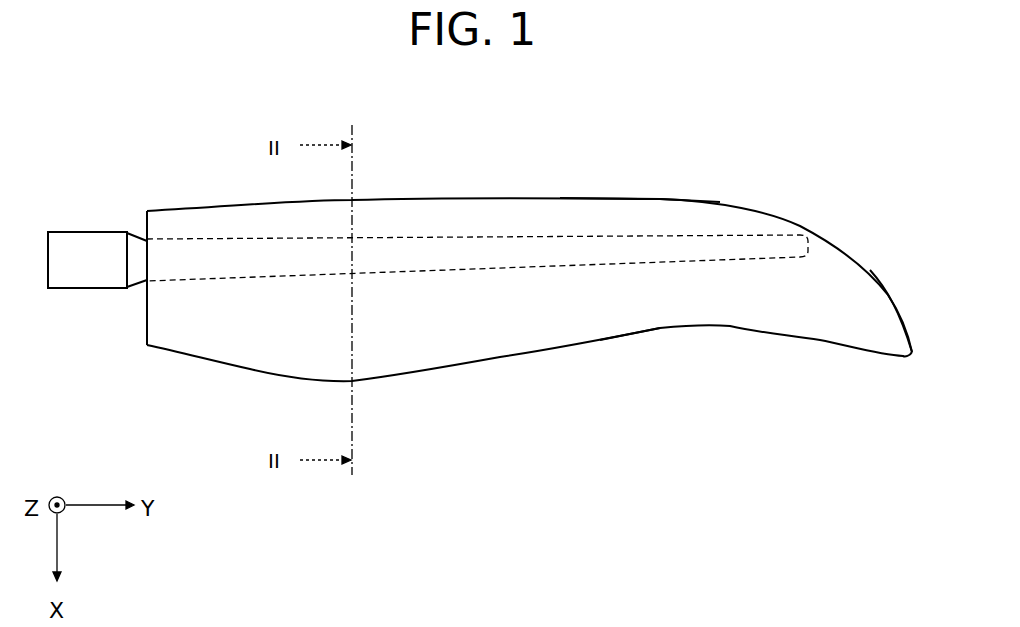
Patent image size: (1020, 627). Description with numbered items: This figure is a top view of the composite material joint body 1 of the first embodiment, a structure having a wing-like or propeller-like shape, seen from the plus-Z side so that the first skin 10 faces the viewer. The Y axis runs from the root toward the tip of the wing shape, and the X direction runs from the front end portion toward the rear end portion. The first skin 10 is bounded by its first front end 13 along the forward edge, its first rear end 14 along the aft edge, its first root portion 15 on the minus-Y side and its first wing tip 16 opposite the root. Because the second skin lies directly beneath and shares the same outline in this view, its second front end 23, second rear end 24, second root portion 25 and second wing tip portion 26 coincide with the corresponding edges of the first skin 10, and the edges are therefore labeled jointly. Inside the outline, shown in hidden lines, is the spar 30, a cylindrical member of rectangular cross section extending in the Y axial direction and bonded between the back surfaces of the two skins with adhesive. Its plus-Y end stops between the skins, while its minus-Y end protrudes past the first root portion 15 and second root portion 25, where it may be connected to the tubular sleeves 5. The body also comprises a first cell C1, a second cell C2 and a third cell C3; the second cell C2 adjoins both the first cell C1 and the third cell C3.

The composite material joint body 1 is at (472, 291).
The tubular sleeve 5 is at (86, 245).
The first skin 10 is at (472, 291).
The first front end 13 is at (529, 232).
The second front end 23 is at (396, 198).
The first rear end 14 is at (529, 397).
The second rear end 24 is at (437, 373).
The first root portion 15 is at (85, 291).
The second root portion 25 is at (147, 313).
The first wing tip 16 is at (888, 281).
The second wing tip portion 26 is at (889, 284).
The spar 30 is at (493, 245).
The first cell C1 is at (582, 210).
The second cell C2 is at (645, 247).
The third cell C3 is at (632, 296).